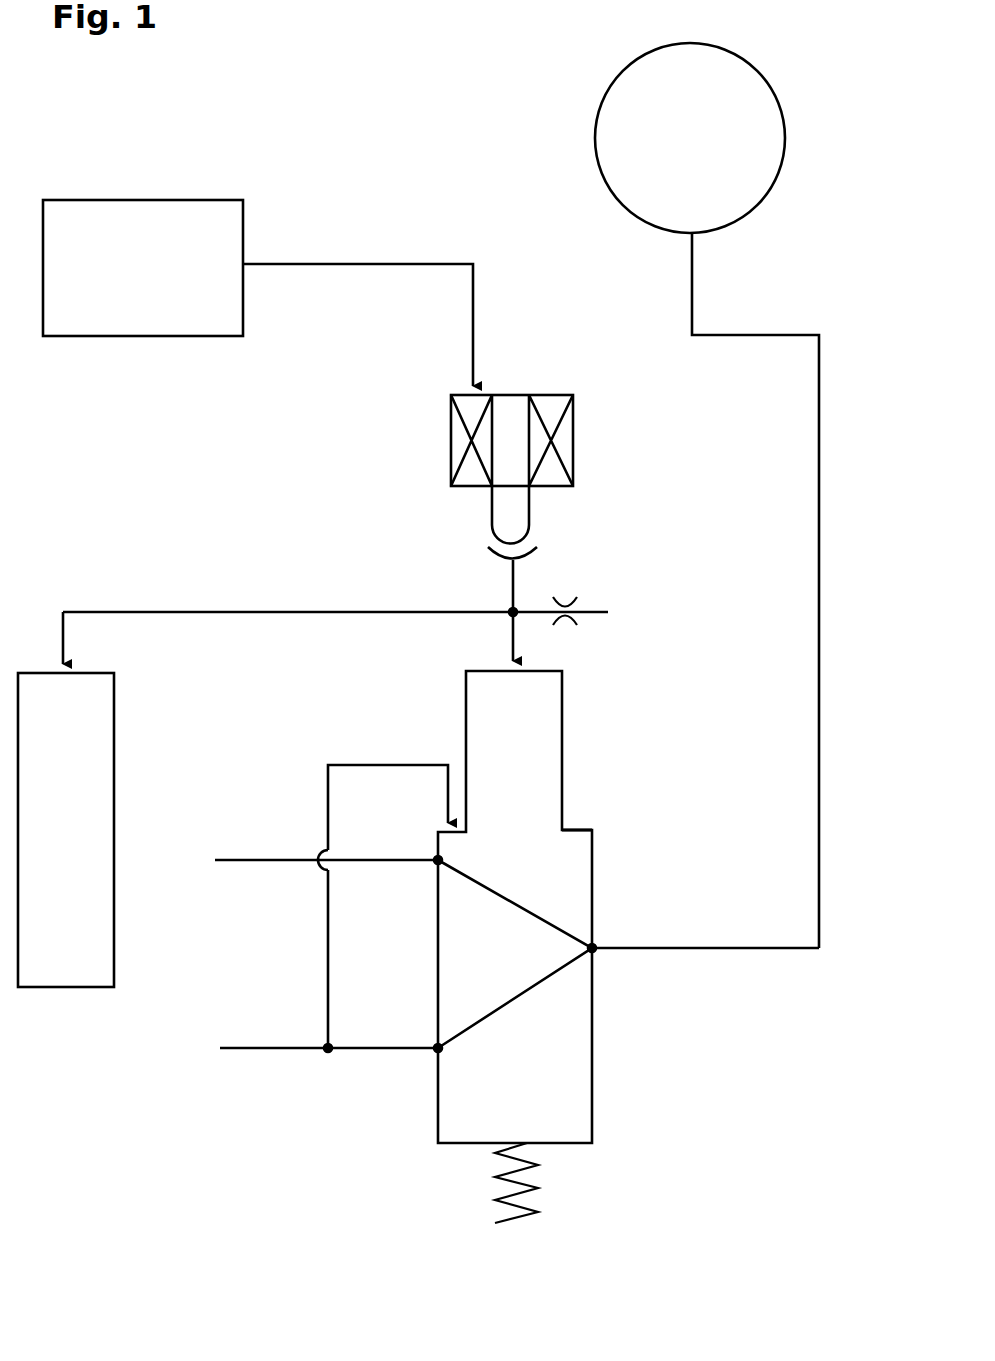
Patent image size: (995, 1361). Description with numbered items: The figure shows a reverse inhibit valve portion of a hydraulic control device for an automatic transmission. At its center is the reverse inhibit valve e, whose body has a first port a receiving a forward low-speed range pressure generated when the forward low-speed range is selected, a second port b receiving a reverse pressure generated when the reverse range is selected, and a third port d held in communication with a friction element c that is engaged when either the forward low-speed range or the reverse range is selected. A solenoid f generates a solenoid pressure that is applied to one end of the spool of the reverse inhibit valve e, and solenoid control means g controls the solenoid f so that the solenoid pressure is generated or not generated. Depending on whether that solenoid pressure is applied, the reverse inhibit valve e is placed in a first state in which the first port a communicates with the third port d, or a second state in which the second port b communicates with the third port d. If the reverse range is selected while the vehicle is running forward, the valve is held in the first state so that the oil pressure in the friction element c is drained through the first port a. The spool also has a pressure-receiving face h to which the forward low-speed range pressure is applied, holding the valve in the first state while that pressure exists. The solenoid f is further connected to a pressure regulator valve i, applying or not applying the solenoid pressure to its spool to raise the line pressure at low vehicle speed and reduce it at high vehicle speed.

The first port a is at (438, 1048).
The second port b is at (438, 860).
The friction element c is at (606, 92).
The third port d is at (594, 950).
The reverse inhibit valve e is at (562, 718).
The solenoid f is at (574, 432).
The solenoid control means g is at (195, 200).
The pressure-receiving face h is at (576, 830).
The pressure regulator valve i is at (114, 697).